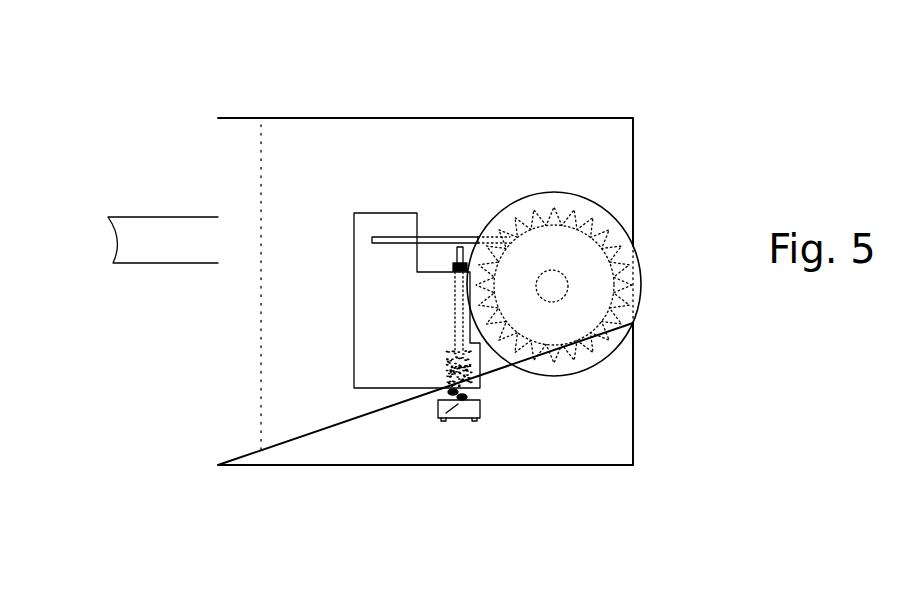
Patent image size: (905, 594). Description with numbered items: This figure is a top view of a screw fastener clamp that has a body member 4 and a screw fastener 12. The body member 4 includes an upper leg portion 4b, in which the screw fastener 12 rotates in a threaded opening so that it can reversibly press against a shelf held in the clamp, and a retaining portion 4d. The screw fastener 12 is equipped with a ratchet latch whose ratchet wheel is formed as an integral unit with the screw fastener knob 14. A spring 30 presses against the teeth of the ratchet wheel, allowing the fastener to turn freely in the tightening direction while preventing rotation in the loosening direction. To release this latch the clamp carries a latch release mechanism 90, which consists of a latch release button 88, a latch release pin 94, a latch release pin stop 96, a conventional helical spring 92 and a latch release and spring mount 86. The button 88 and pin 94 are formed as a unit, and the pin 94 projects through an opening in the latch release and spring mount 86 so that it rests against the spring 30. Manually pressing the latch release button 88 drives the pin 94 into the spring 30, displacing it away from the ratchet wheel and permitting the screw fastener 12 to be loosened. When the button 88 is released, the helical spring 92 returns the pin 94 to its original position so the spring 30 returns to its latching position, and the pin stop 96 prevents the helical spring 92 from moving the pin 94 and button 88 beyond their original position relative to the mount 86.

The body member 4 is at (635, 358).
The retaining portion 4d is at (170, 242).
The upper leg portion 4b is at (590, 423).
The screw fastener 12 is at (603, 205).
The screw fastener knob 14 is at (513, 212).
The spring 30 is at (440, 237).
The latch release and spring mount 86 is at (380, 352).
The latch release button 88 is at (448, 413).
The latch release mechanism 90 is at (470, 419).
The helical spring 92 is at (450, 392).
The latch release pin 94 is at (457, 256).
The latch release pin stop 96 is at (453, 268).